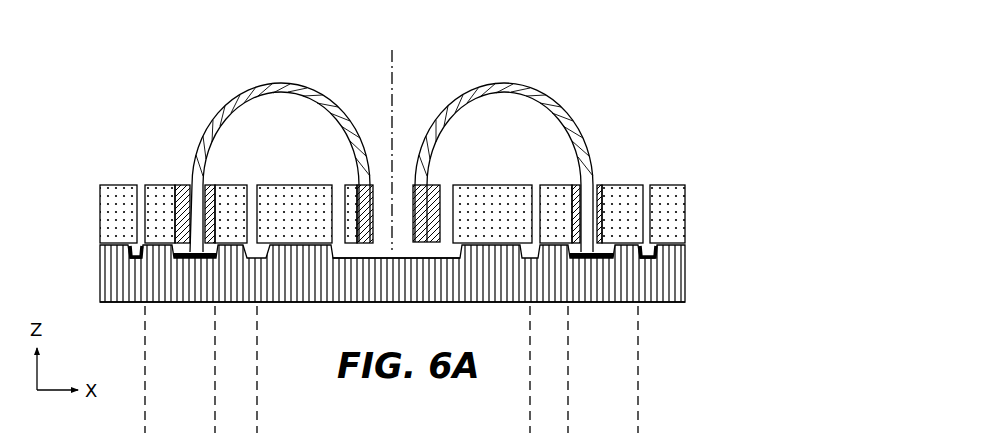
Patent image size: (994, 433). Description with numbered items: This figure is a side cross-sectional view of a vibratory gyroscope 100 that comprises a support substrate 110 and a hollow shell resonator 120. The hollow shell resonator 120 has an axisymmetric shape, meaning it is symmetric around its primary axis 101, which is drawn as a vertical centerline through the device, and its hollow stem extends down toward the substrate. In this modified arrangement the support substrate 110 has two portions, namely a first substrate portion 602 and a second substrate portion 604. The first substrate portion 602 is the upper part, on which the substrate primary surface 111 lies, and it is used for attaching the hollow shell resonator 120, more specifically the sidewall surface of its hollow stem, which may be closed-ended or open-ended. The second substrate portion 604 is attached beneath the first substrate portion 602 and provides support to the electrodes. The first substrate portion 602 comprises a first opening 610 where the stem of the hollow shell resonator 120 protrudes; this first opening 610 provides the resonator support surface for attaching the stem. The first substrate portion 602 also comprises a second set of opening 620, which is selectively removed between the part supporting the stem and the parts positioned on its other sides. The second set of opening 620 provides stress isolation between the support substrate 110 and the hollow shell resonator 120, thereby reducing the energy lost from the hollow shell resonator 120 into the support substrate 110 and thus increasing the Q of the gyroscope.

The vibratory gyroscope 100 is at (481, 170).
The primary axis 101 is at (390, 90).
The support substrate 110 is at (440, 173).
The substrate primary surface 111 is at (667, 180).
The hollow shell resonator 120 is at (538, 90).
The first substrate portion 602 is at (677, 190).
The second substrate portion 604 is at (673, 287).
The first opening 610 is at (399, 192).
The second set of opening 620 is at (449, 186).